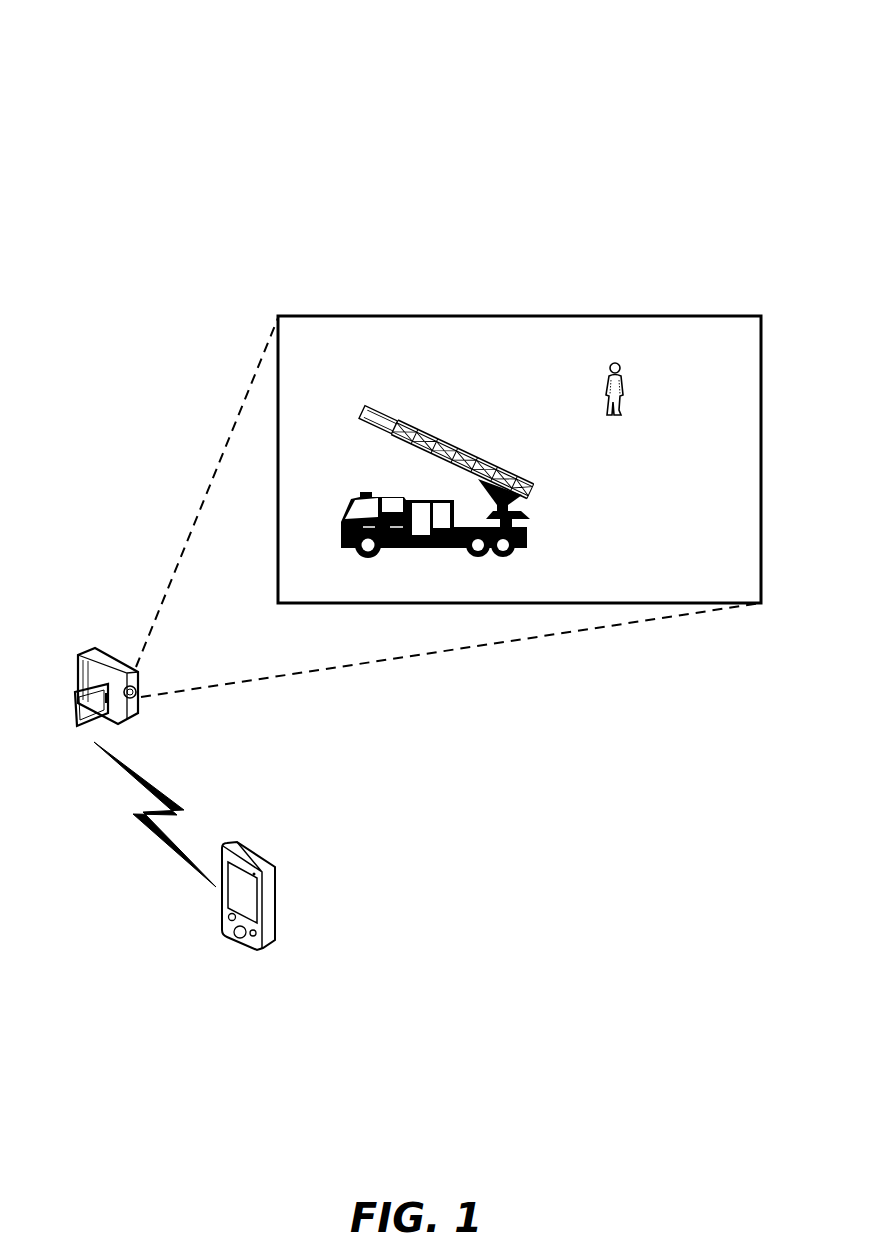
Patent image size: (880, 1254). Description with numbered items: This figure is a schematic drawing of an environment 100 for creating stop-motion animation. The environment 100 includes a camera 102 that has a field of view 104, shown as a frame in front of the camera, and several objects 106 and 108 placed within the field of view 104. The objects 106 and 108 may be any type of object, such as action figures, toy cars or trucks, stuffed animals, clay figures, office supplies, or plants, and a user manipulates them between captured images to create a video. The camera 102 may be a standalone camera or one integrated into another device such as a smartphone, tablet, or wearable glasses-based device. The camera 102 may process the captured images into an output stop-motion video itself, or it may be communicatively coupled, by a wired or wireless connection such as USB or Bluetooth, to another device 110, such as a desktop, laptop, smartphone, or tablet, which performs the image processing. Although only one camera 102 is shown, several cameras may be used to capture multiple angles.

The environment 100 is at (585, 72).
The camera 102 is at (113, 726).
The field of view 104 is at (696, 302).
The object 106 is at (624, 374).
The object 108 is at (478, 468).
The device 110 is at (277, 912).